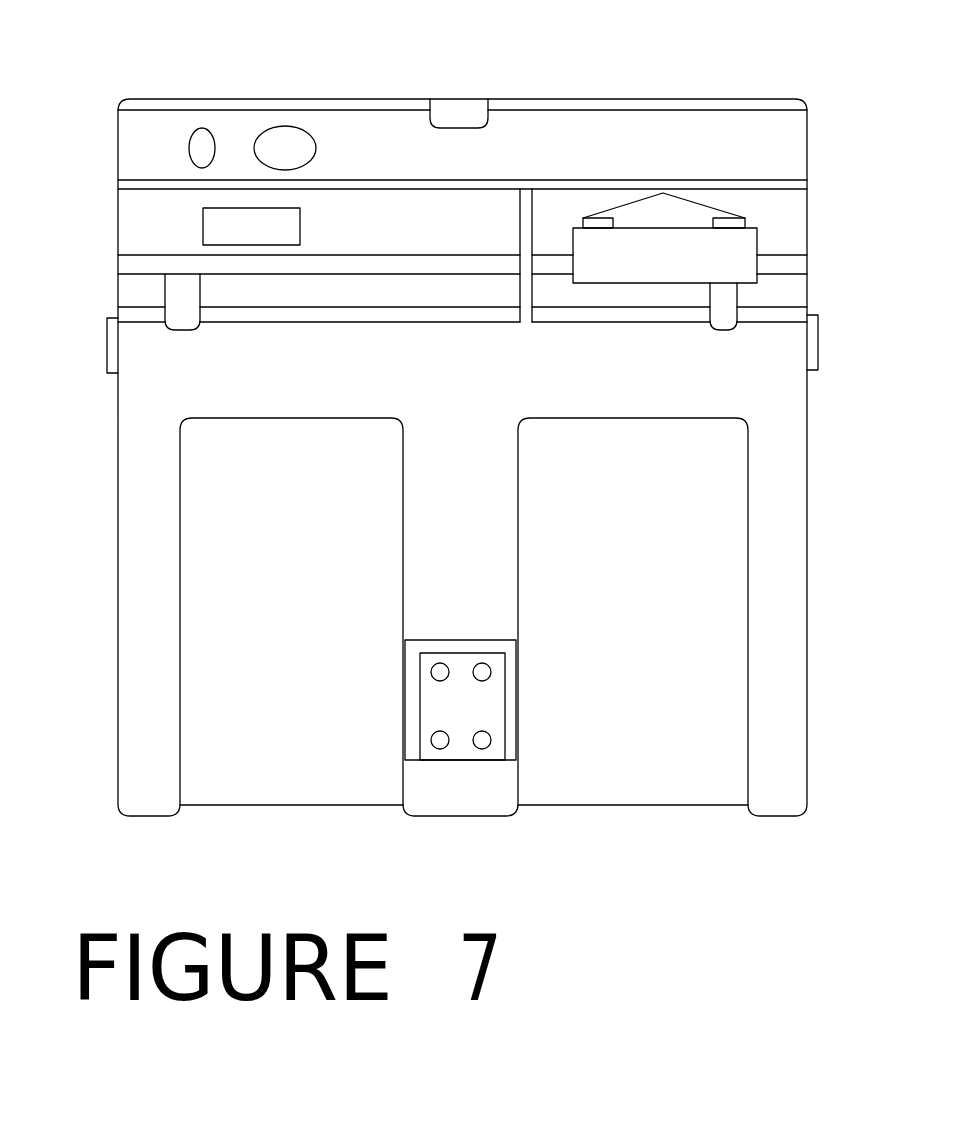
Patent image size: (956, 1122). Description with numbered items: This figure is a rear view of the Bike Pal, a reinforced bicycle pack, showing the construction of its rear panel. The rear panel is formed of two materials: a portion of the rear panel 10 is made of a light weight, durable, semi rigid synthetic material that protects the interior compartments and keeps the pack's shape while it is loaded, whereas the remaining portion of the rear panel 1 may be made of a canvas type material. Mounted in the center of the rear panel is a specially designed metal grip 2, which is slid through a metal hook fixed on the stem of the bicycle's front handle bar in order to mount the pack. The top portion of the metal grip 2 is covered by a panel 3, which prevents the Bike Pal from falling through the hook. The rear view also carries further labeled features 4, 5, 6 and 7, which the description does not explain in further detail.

The rear panel canvas portion 1 is at (267, 642).
The metal grip 2 is at (460, 707).
The panel 3 is at (735, 165).
The slide latch 4 is at (650, 242).
The notch 5 is at (447, 117).
The window 6 is at (285, 228).
The key lock 7 is at (275, 143).
The rear panel 10 is at (270, 582).